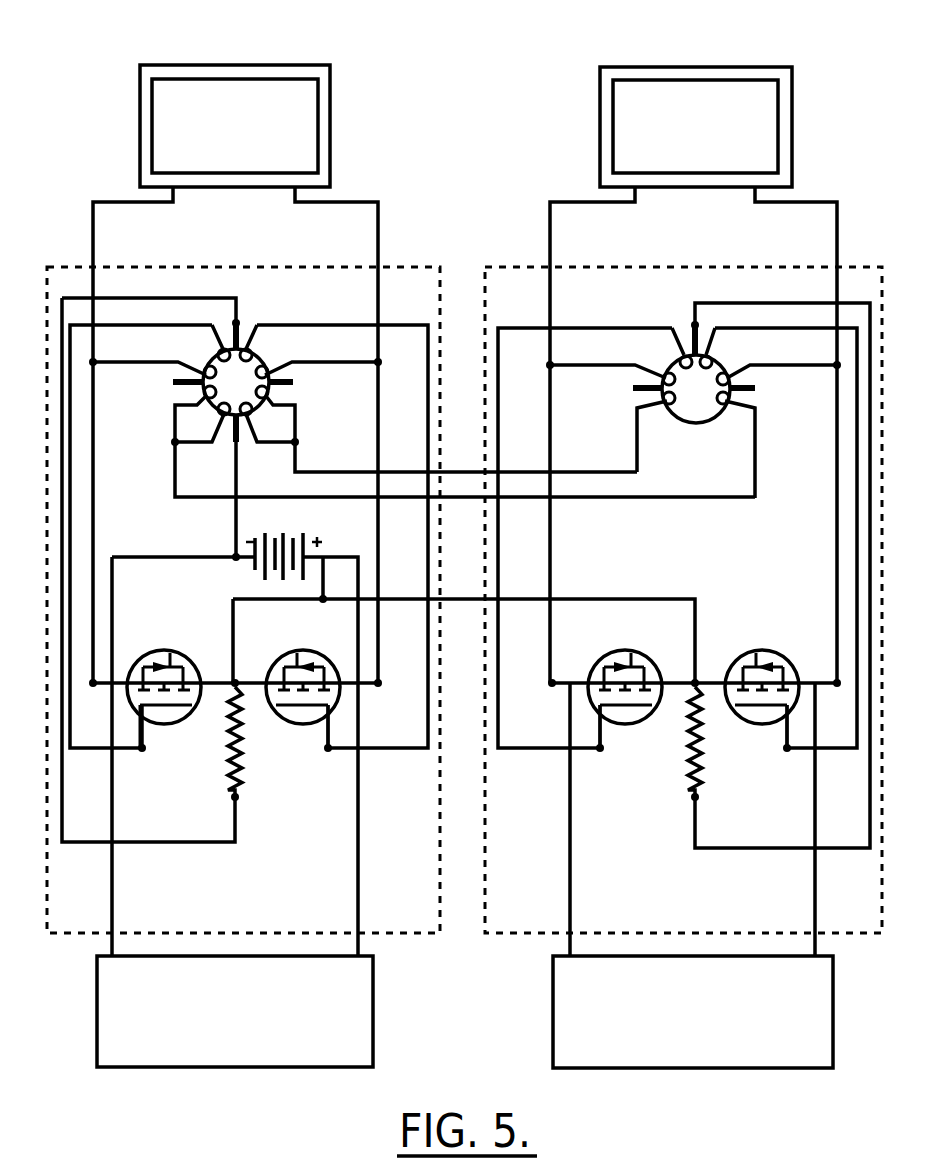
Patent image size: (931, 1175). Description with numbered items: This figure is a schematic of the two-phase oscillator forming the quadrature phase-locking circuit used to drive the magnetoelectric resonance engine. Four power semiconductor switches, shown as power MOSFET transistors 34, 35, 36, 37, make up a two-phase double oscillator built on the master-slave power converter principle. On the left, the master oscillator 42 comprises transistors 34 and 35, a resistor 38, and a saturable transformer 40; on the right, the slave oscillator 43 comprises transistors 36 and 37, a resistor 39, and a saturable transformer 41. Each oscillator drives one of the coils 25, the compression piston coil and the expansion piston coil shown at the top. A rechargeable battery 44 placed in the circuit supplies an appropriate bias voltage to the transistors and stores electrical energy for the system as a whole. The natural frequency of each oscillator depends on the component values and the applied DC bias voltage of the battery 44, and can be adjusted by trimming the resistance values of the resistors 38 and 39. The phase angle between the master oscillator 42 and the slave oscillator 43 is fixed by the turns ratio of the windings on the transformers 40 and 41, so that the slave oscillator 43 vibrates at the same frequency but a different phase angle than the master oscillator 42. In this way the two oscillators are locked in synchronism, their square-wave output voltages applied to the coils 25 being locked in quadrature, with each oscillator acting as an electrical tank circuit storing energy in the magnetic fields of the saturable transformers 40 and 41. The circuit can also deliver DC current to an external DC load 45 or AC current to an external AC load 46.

The coil 25 is at (256, 133).
The transistor 34 is at (164, 683).
The transistor 35 is at (303, 683).
The transistor 36 is at (625, 683).
The transistor 37 is at (762, 683).
The resistor 38 is at (251, 742).
The resistor 39 is at (714, 742).
The saturable transformer 40 is at (254, 395).
The saturable transformer 41 is at (682, 398).
The master oscillator 42 is at (237, 906).
The slave oscillator 43 is at (729, 908).
The rechargeable battery 44 is at (272, 527).
The DC load 45 is at (224, 989).
The AC load 46 is at (684, 989).